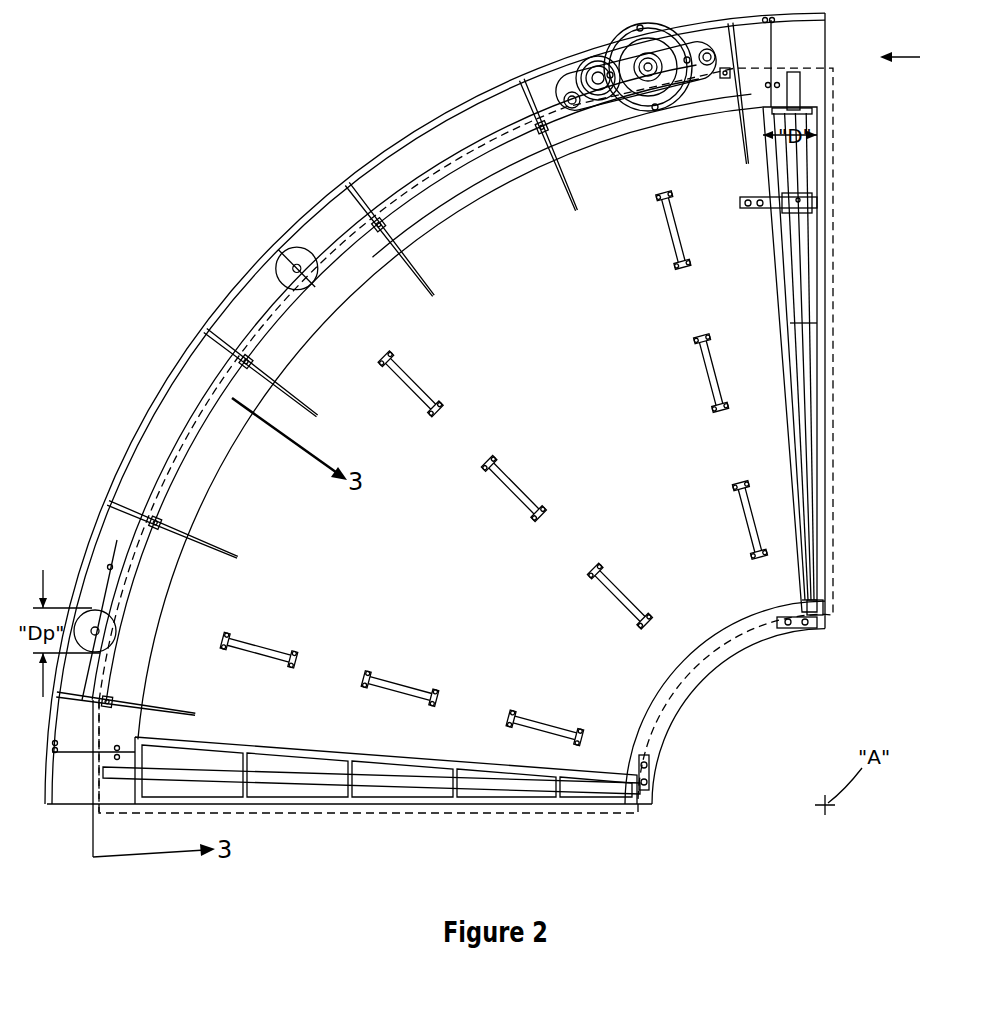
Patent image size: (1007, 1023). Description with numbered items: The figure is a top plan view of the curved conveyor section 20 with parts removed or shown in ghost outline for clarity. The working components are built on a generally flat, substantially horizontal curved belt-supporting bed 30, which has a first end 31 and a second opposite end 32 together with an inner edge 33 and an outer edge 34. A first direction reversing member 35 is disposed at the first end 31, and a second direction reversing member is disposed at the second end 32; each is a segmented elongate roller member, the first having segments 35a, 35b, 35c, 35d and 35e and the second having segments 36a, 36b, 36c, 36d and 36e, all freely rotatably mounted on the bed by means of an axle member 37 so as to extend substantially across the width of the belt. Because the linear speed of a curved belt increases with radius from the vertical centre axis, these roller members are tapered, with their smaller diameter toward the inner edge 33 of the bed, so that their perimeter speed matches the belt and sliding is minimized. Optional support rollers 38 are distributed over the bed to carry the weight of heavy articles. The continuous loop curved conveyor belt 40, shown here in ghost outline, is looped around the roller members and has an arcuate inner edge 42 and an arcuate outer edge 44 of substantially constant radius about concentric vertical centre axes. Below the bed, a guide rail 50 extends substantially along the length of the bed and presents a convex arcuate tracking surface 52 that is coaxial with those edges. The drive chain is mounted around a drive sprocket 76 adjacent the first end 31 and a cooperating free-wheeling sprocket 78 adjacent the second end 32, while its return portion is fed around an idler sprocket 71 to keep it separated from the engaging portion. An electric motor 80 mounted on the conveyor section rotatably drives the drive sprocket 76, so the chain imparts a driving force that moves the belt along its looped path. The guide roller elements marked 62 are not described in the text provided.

The curved conveyor section 20 is at (827, 657).
The belt-supporting bed 30 is at (558, 425).
The first end 31 is at (776, 320).
The second end 32 is at (200, 745).
The inner edge 33 is at (695, 688).
The outer edge 34 is at (236, 427).
The first direction reversing member 35 is at (790, 357).
The roller segment 35a is at (810, 525).
The roller segment 35b is at (812, 440).
The roller segment 35c is at (815, 345).
The roller segment 35d is at (813, 262).
The roller segment 35e is at (812, 170).
The roller segment 36a is at (563, 797).
The roller segment 36b is at (487, 795).
The roller segment 36c is at (400, 795).
The roller segment 36d is at (300, 795).
The roller segment 36e is at (195, 793).
The axle member 37 is at (285, 773).
The support rollers 38 is at (657, 232).
The continuous loop curved conveyor belt 40 is at (727, 646).
The arcuate inner edge 42 is at (662, 718).
The arcuate outer edge 44 is at (553, 152).
The guide rail 50 is at (352, 265).
The convex arcuate tracking surface 52 is at (295, 318).
The guide roller 62 is at (725, 80).
The idler sprocket 71 is at (297, 247).
The drive sprocket 76 is at (597, 76).
The free-wheeling sprocket 78 is at (107, 637).
The electric motor 80 is at (662, 116).